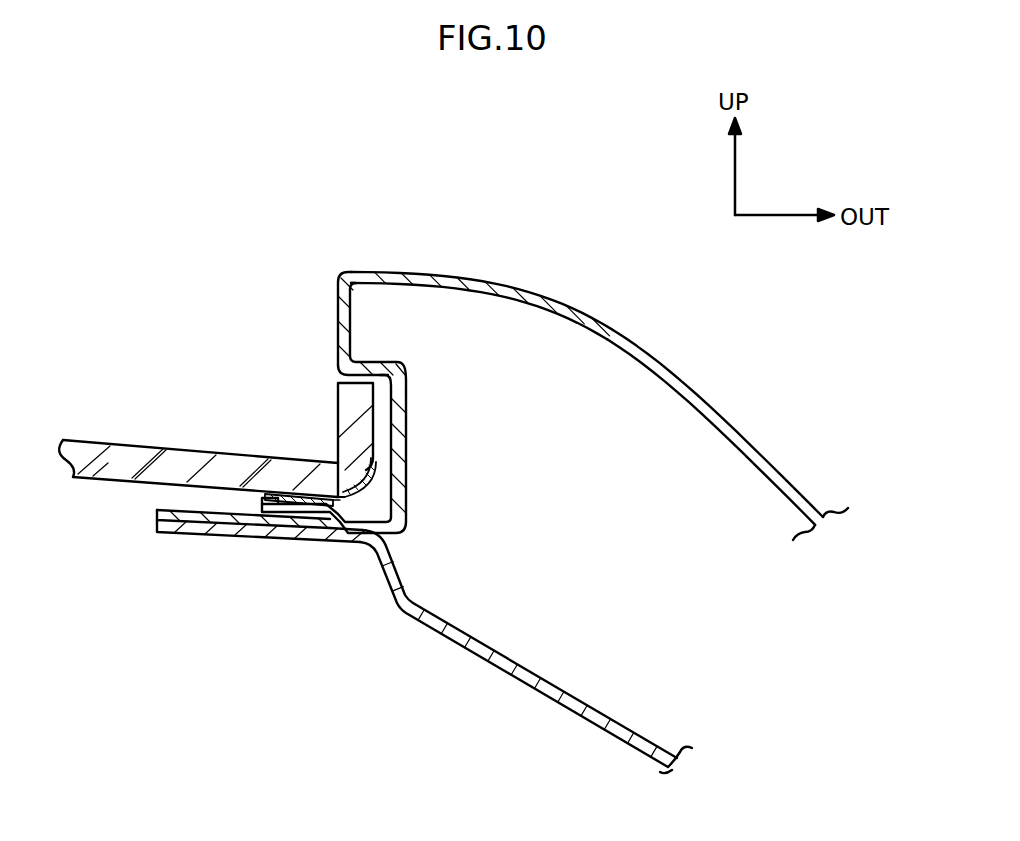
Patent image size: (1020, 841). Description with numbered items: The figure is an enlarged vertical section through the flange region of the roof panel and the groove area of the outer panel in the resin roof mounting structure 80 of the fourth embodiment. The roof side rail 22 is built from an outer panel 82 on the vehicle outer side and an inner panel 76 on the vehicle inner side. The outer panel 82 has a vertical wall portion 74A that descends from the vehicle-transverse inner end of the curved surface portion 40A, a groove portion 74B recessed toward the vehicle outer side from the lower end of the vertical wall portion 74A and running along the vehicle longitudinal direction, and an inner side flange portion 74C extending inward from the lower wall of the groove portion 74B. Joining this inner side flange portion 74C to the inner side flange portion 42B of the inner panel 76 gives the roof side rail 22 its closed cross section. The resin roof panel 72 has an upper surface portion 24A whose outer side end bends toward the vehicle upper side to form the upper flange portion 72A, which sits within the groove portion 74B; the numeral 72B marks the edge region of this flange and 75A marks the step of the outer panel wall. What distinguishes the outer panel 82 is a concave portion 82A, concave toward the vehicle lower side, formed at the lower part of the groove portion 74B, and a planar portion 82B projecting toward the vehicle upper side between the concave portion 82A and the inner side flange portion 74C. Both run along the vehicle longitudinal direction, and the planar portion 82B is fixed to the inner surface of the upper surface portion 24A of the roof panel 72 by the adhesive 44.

The roof side rail 22 is at (802, 398).
The upper surface portion 24A is at (107, 452).
The curved surface portion 40A is at (642, 352).
The inner side flange portion 42B is at (190, 532).
The adhesive 44 is at (313, 491).
The roof panel 72 is at (152, 442).
The upper flange portion 72A is at (345, 398).
The molding edge 72B is at (350, 377).
The vertical wall portion 74A is at (338, 322).
The groove portion 74B is at (388, 430).
The inner side flange portion 74C is at (157, 515).
The garnish step portion 75A is at (398, 378).
The inner panel 76 is at (520, 692).
The resin roof mounting structure 80 is at (546, 192).
The outer panel 82 is at (697, 387).
The concave portion 82A is at (365, 512).
The planar portion 82B is at (278, 490).